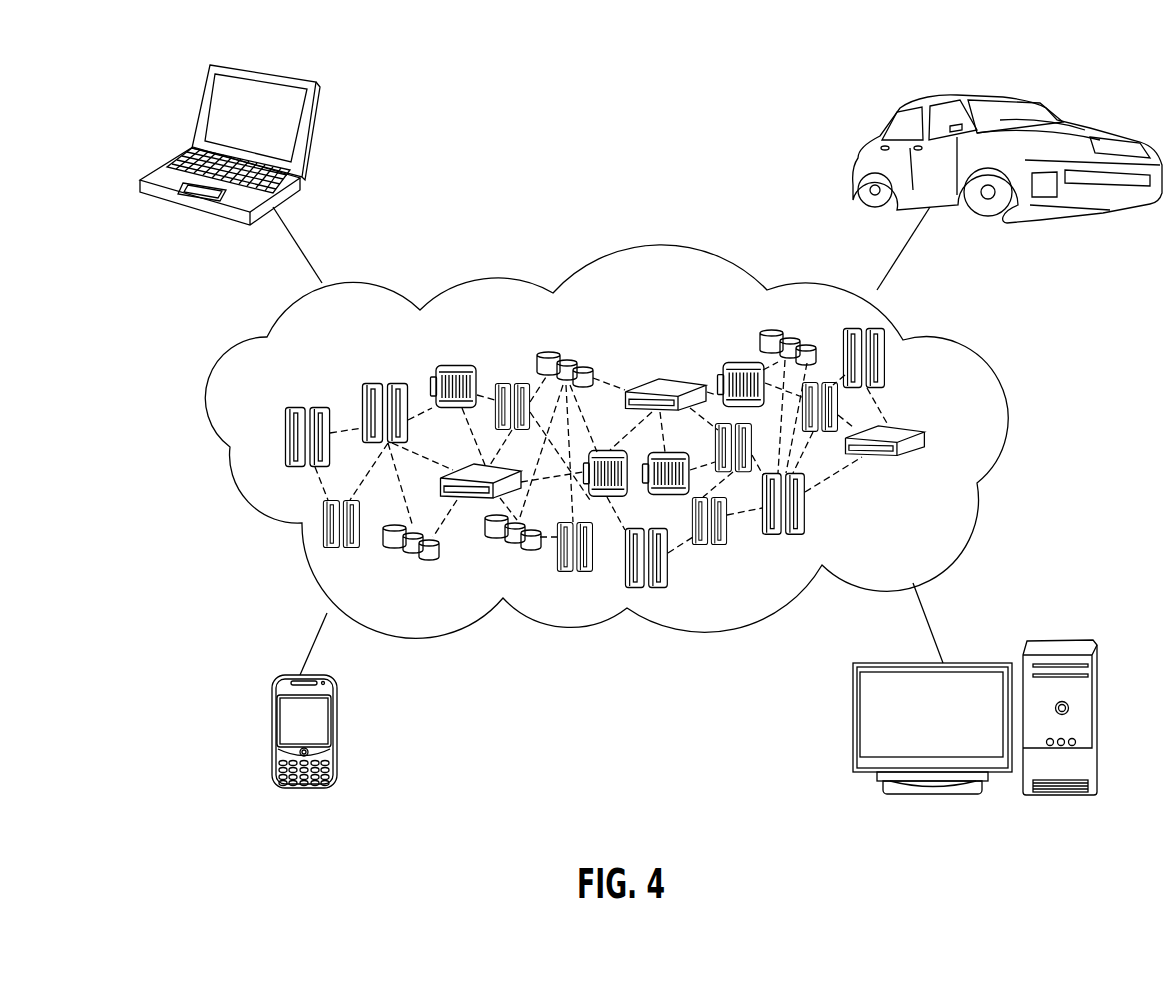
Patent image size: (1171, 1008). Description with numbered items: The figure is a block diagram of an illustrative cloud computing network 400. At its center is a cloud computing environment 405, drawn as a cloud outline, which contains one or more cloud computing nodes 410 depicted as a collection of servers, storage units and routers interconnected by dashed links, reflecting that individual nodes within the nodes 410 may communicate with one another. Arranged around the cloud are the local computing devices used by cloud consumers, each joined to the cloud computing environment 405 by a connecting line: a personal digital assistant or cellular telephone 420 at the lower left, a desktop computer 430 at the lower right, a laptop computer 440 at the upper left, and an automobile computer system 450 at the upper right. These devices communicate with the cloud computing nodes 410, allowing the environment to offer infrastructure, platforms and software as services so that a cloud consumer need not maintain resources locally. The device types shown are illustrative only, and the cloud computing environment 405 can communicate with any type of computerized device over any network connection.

The cloud computing network 400 is at (628, 45).
The cloud computing environment 405 is at (987, 355).
The cloud computing nodes 410 is at (689, 458).
The cellular telephone 420 is at (272, 733).
The desktop computer 430 is at (1067, 640).
The laptop computer 440 is at (310, 130).
The automobile computer system 450 is at (865, 145).